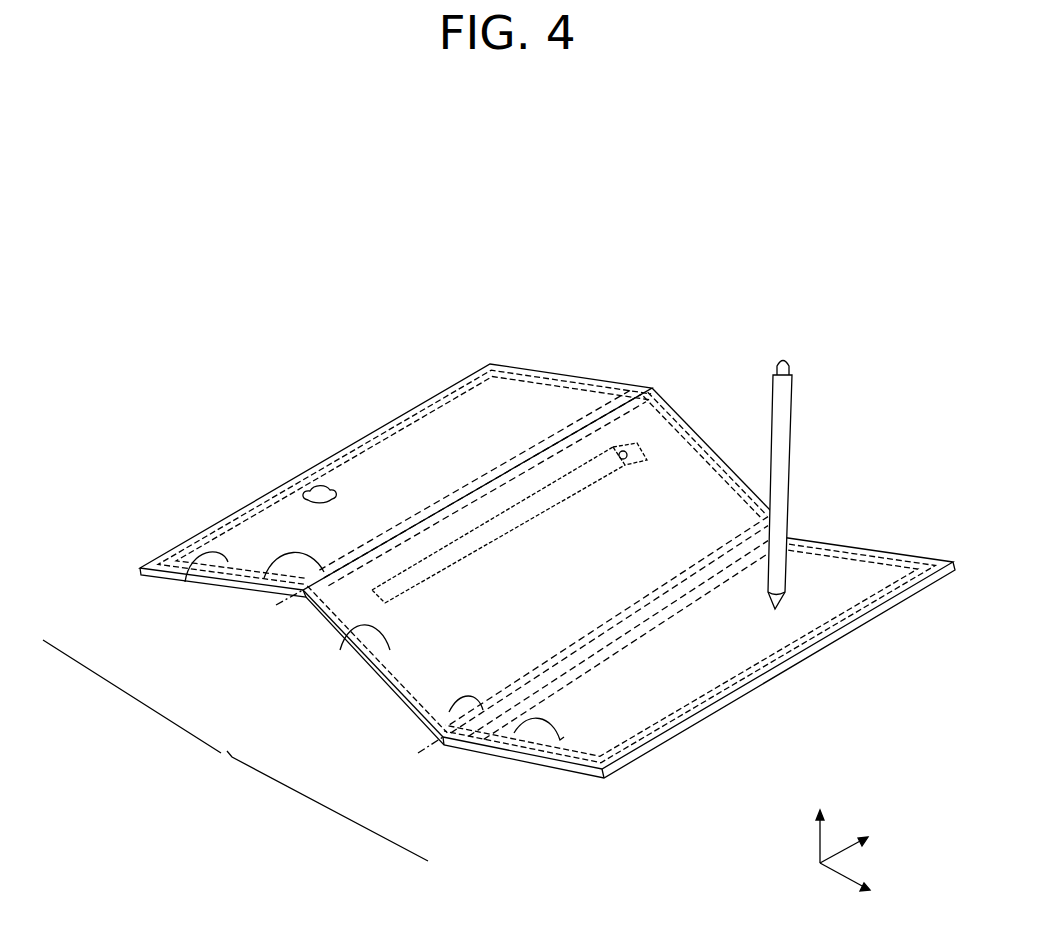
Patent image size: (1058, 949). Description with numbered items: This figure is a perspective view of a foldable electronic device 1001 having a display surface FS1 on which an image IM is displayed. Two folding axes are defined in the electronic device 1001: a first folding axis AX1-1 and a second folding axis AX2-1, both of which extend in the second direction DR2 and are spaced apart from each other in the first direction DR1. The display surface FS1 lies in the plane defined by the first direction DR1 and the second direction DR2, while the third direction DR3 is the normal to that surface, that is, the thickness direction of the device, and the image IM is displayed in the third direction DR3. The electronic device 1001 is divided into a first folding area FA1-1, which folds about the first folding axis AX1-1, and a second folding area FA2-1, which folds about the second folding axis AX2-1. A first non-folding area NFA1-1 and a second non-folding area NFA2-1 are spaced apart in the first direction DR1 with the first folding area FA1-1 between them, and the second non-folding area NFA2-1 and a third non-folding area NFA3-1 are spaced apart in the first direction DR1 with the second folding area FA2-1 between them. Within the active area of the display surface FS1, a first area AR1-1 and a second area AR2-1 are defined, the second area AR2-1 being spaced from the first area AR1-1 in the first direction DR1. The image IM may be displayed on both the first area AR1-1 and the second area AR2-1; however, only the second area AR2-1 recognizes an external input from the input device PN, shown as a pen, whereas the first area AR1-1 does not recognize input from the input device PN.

The electronic device 1001 is at (828, 322).
The first area AR1-1 is at (563, 378).
The first folding axis AX1-1 is at (655, 386).
The second folding axis AX2-1 is at (792, 532).
The second area AR2-1 is at (899, 561).
The image IM is at (316, 492).
The input device PN is at (784, 401).
The first non-folding area NFA1-1 is at (185, 582).
The first folding area FA1-1 is at (264, 578).
The second non-folding area NFA2-1 is at (340, 650).
The second folding area FA2-1 is at (449, 712).
The third non-folding area NFA3-1 is at (514, 733).
The display surface FS1 is at (235, 750).
The first direction DR1 is at (869, 884).
The second direction DR2 is at (869, 842).
The third direction DR3 is at (820, 823).